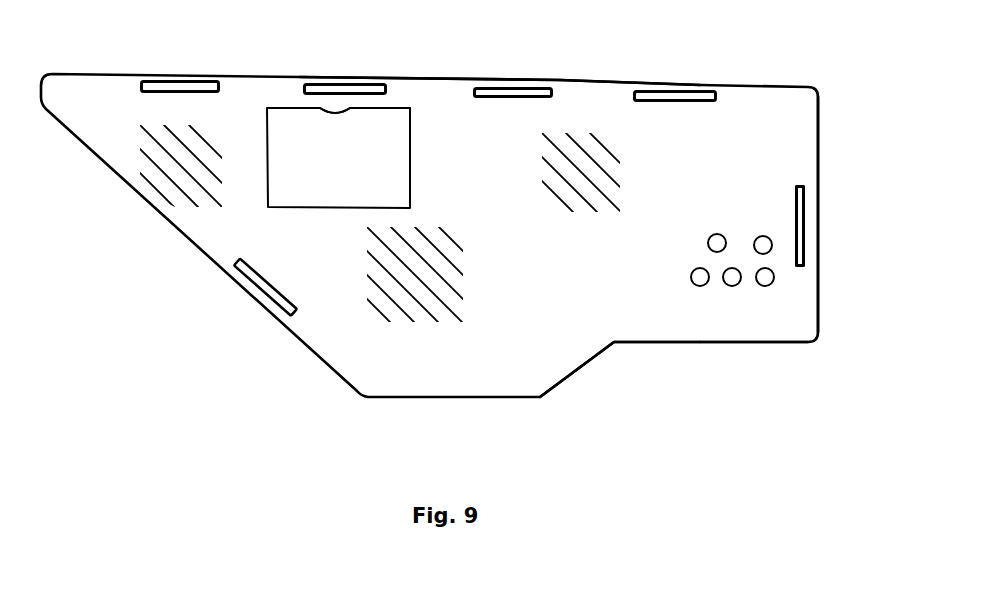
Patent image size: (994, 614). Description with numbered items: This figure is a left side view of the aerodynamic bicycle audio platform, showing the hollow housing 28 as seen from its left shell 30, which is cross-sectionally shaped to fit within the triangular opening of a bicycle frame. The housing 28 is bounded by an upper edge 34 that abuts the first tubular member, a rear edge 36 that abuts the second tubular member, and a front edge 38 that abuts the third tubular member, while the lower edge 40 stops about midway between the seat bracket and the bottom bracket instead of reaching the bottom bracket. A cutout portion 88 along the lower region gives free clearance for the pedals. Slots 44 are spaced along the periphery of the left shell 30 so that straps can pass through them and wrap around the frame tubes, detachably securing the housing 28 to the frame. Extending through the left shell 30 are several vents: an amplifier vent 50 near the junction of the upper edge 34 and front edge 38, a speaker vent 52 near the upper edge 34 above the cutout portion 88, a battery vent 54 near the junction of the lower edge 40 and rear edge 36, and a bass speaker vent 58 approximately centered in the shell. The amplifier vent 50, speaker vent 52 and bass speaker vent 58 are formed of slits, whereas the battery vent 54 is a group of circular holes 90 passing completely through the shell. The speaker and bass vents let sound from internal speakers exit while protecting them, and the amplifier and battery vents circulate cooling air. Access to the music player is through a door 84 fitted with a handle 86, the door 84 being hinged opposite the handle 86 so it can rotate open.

The hollow housing 28 is at (779, 105).
The left shell 30 is at (428, 100).
The upper edge 34 is at (592, 80).
The rear edge 36 is at (819, 166).
The front edge 38 is at (225, 268).
The lower edge 40 is at (662, 343).
The slots 44 is at (508, 98).
The amplifier vent 50 is at (178, 162).
The speaker vent 52 is at (583, 167).
The battery vent 54 is at (743, 267).
The bass speaker vent 58 is at (408, 280).
The door 84 is at (293, 116).
The handle 86 is at (338, 108).
The cutout portion 88 is at (743, 345).
The circular holes 90 is at (770, 241).